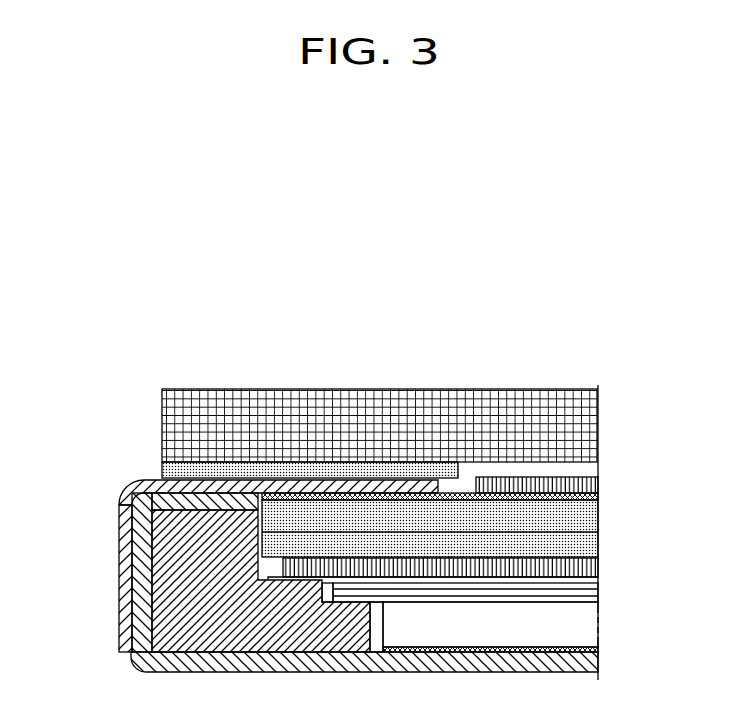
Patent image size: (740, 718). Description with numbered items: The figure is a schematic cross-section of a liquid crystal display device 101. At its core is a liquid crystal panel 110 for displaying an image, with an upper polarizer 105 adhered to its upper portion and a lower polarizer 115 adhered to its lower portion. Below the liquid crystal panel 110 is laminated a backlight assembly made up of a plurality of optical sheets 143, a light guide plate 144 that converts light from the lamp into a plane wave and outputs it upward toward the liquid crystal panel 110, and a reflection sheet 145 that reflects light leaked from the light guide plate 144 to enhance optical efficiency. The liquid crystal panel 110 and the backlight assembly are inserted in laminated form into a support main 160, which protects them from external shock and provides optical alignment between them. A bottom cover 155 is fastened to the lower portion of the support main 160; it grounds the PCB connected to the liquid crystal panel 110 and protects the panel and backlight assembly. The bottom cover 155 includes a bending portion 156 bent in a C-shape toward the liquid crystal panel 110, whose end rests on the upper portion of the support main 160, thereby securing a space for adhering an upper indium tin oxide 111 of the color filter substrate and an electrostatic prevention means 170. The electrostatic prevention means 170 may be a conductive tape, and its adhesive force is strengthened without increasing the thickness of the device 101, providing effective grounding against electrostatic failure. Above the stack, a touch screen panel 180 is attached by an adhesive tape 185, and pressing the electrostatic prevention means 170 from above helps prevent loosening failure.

The liquid crystal display device 101 is at (630, 385).
The upper polarizer 105 is at (593, 484).
The liquid crystal panel 110 is at (605, 497).
The upper indium tin oxide (ITO) 111 is at (600, 499).
The lower polarizer 115 is at (597, 569).
The optical sheets 143 is at (598, 599).
The light guide plate 144 is at (598, 625).
The reflection sheet 145 is at (593, 651).
The bottom cover 155 is at (593, 663).
The bending portion 156 is at (140, 493).
The support main 160 is at (167, 610).
The electrostatic prevention means 170 is at (118, 538).
The touch screen panel 180 is at (170, 421).
The adhesive tape 185 is at (164, 466).